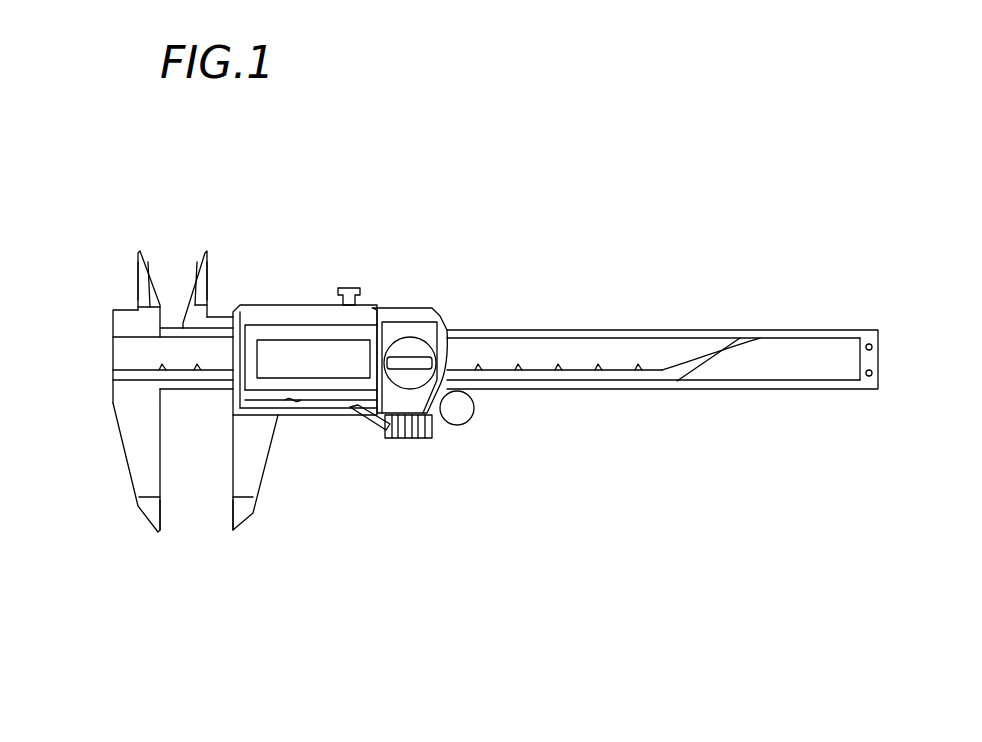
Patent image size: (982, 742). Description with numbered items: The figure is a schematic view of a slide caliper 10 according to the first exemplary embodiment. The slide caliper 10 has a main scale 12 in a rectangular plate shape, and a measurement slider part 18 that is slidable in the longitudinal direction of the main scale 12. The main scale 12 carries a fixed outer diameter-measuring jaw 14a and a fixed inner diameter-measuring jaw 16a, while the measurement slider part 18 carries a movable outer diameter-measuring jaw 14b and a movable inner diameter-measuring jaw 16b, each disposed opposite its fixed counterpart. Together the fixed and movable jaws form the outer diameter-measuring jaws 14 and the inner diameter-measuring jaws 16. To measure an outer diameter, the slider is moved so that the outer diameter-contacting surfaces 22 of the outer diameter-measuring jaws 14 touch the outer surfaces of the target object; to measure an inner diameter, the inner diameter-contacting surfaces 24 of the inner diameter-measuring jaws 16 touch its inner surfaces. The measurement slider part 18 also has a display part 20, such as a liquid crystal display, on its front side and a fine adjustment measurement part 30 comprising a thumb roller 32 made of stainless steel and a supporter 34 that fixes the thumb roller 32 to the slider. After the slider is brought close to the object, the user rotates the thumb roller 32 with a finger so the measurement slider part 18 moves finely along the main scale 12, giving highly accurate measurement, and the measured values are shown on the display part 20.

The slide caliper 10 is at (540, 204).
The main scale 12 is at (540, 355).
The outer diameter-measuring jaws 14 is at (217, 652).
The fixed outer diameter-measuring jaw 14a is at (143, 520).
The movable outer diameter-measuring jaw 14b is at (247, 452).
The inner diameter-measuring jaws 16 is at (263, 147).
The fixed inner diameter-measuring jaw 16a is at (137, 264).
The movable inner diameter-measuring jaw 16b is at (211, 262).
The measurement slider part 18 is at (318, 305).
The display part 20 is at (333, 365).
The outer diameter-contacting surfaces 22 is at (168, 528).
The inner diameter-contacting surfaces 24 is at (133, 290).
The fine adjustment measurement part 30 is at (533, 525).
The thumb roller 32 is at (466, 419).
The supporter 34 is at (432, 438).